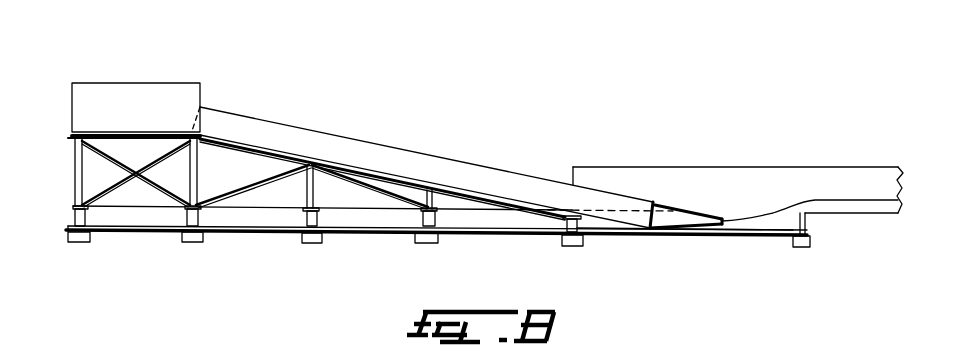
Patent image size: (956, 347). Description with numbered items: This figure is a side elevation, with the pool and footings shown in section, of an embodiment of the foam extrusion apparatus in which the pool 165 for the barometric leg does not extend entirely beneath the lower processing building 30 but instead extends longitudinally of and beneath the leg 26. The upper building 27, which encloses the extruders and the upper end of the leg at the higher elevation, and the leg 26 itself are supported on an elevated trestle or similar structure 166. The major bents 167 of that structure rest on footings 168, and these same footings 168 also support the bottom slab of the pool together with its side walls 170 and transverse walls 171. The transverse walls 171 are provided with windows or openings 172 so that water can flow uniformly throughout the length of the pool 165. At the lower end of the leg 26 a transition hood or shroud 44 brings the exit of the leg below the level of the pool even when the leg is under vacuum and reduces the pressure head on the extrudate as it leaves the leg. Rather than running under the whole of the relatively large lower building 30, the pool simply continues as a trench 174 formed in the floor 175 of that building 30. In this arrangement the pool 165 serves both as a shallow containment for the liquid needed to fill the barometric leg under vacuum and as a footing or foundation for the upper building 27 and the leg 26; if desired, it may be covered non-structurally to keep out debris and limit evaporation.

The upper building 27 is at (133, 83).
The barometric leg 26 is at (308, 134).
The lower processing building 30 is at (700, 167).
The transition hood 44 is at (670, 211).
The pool 165 is at (385, 221).
The trestle 166 is at (62, 186).
The major bents 167 is at (198, 172).
The footings 168 is at (83, 243).
The side walls 170 is at (257, 222).
The transverse walls 171 is at (318, 212).
The windows or openings 172 is at (320, 224).
The trench 174 is at (767, 226).
The floor 175 is at (870, 207).